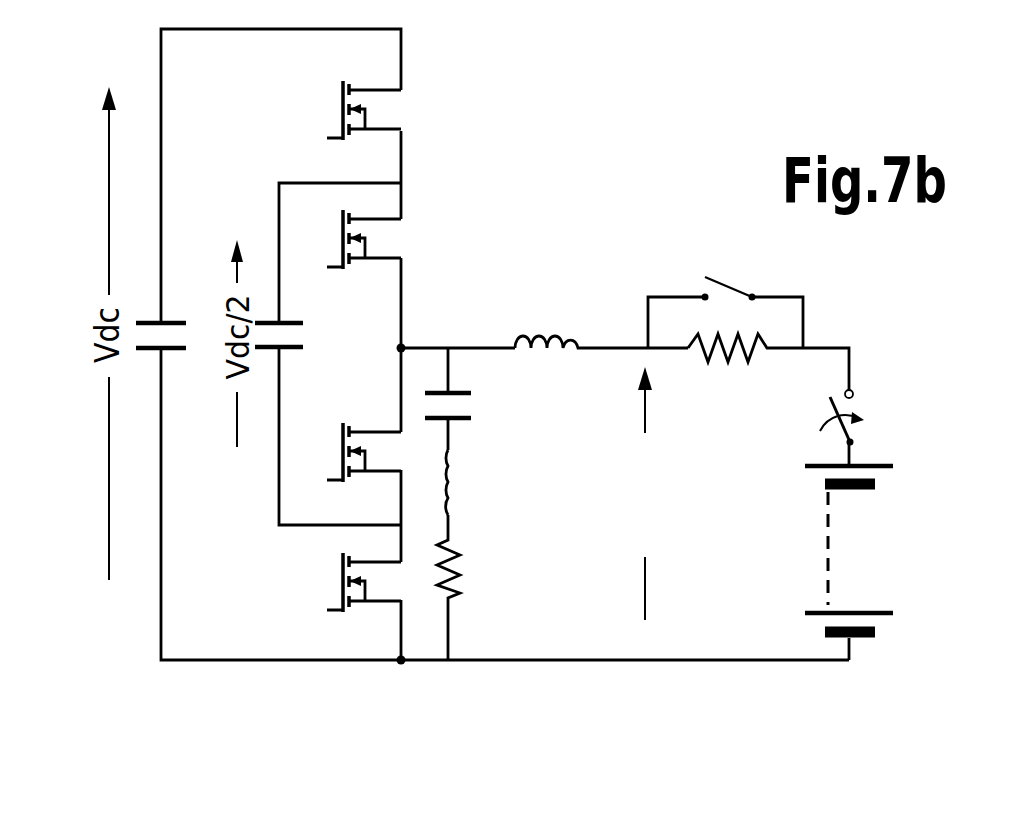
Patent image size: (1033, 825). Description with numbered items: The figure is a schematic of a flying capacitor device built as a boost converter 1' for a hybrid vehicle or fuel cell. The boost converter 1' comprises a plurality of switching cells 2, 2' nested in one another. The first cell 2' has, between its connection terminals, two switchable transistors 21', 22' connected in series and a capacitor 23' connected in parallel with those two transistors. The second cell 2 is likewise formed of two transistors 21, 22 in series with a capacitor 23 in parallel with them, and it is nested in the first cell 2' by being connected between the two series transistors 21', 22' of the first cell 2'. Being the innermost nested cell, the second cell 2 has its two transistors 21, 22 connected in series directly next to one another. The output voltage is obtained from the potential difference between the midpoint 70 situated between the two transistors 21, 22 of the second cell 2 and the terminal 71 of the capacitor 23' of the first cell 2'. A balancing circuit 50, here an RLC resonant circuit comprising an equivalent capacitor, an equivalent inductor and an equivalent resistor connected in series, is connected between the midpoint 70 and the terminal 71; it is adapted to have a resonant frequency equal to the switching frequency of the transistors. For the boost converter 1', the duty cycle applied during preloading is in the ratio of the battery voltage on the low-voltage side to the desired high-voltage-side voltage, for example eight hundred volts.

The boost converter 1' is at (704, 342).
The second cell 2 is at (296, 333).
The first cell 2' is at (503, 390).
The transistor 21 is at (311, 503).
The transistor 21' is at (349, 647).
The transistor 22 is at (330, 192).
The transistor 22' is at (319, 88).
The capacitor 23 is at (238, 397).
The capacitor 23' is at (108, 291).
The balancing circuit 50 is at (478, 525).
The midpoint 70 is at (403, 346).
The terminal 71 is at (401, 665).